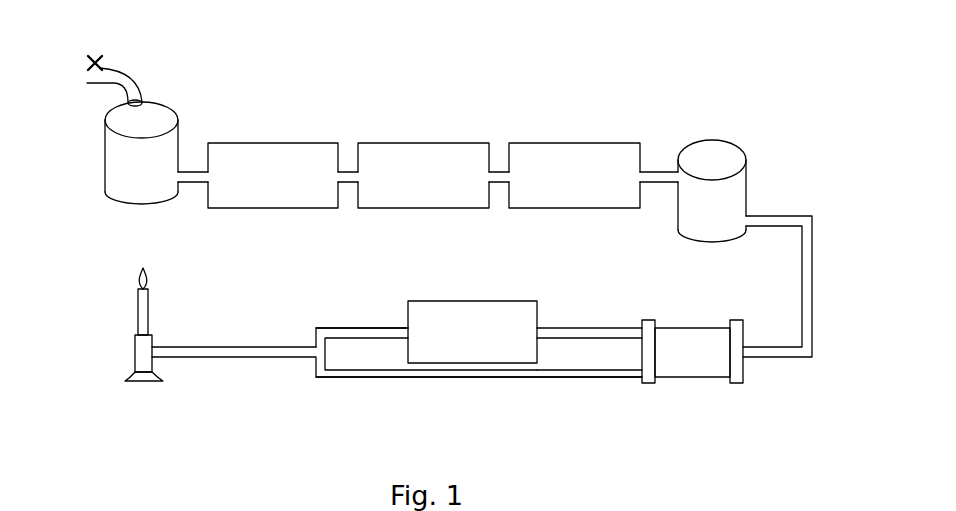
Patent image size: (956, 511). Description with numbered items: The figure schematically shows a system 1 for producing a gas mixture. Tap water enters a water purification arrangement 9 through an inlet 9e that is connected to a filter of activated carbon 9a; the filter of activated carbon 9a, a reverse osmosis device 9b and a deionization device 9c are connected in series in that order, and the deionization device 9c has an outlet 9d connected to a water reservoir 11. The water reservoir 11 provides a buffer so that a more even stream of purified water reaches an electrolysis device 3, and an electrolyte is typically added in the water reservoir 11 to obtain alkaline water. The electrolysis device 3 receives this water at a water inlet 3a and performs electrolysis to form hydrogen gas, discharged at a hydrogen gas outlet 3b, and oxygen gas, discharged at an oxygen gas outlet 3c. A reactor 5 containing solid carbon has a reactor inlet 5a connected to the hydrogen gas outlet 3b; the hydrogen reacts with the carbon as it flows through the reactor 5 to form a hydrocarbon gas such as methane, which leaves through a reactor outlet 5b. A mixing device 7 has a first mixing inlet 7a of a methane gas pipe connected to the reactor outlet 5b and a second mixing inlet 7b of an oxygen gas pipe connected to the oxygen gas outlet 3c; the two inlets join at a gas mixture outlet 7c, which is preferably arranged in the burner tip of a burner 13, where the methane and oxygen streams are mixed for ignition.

The system 1 is at (791, 28).
The electrolysis device 3 is at (712, 377).
The water inlet 3a is at (745, 338).
The hydrogen gas outlet 3b is at (641, 321).
The oxygen gas outlet 3c is at (642, 383).
The reactor 5 is at (453, 300).
The reactor inlet 5a is at (541, 338).
The reactor outlet 5b is at (402, 339).
The mixing device 7 is at (314, 356).
The first mixing inlet 7a is at (307, 318).
The second mixing inlet 7b is at (350, 378).
The gas mixture outlet 7c is at (280, 358).
The water purification arrangement 9 is at (648, 138).
The filter of activated carbon 9a is at (257, 208).
The reverse osmosis device 9b is at (390, 208).
The deionization device 9c is at (550, 208).
The outlet 9d is at (662, 172).
The inlet 9e is at (187, 172).
The water reservoir 11 is at (745, 150).
The burner 13 is at (137, 356).